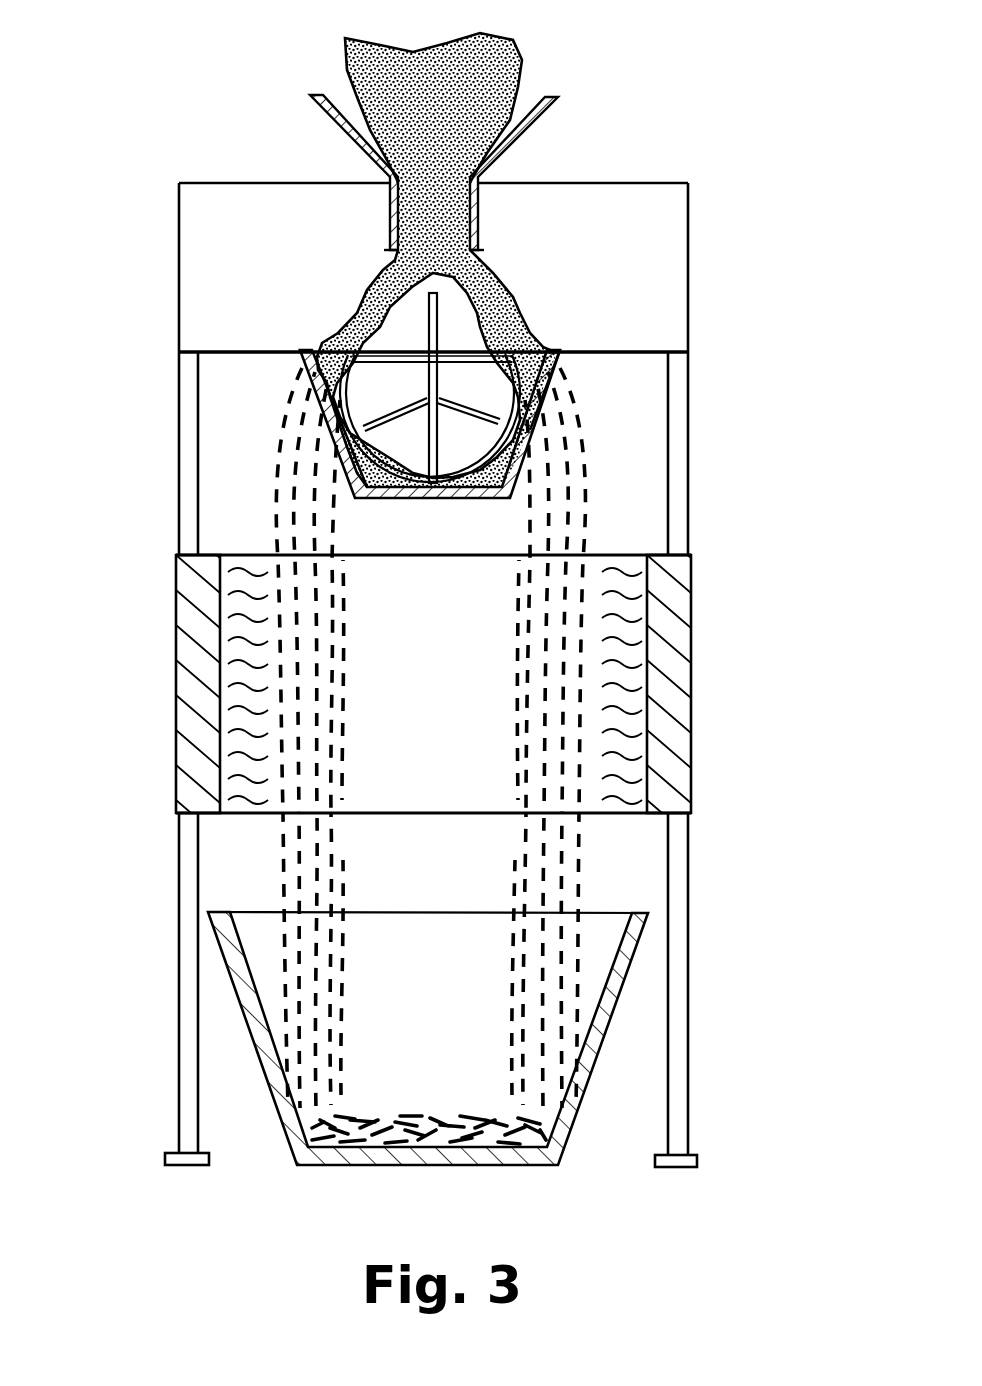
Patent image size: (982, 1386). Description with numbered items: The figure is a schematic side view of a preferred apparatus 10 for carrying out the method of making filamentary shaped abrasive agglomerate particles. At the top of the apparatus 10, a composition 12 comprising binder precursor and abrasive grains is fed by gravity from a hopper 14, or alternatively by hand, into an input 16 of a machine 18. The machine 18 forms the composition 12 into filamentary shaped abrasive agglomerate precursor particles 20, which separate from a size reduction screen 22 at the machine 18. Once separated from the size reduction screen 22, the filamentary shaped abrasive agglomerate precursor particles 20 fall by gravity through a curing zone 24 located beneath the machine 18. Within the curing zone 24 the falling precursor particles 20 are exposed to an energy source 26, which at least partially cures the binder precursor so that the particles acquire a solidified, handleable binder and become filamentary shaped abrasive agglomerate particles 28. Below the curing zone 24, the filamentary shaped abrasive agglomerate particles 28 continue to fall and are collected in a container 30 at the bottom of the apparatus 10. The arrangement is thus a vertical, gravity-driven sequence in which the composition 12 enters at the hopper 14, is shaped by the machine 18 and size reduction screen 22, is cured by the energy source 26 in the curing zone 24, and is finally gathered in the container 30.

The apparatus 10 is at (694, 256).
The composition 12 is at (485, 283).
The hopper 14 is at (513, 130).
The input 16 is at (488, 342).
The machine 18 is at (552, 340).
The filamentary shaped abrasive agglomerate precursor particles 20 is at (590, 466).
The size reduction screen 22 is at (557, 363).
The curing zone 24 is at (668, 595).
The energy source 26 is at (628, 665).
The filamentary shaped abrasive agglomerate particles 28 is at (580, 865).
The container 30 is at (590, 1046).